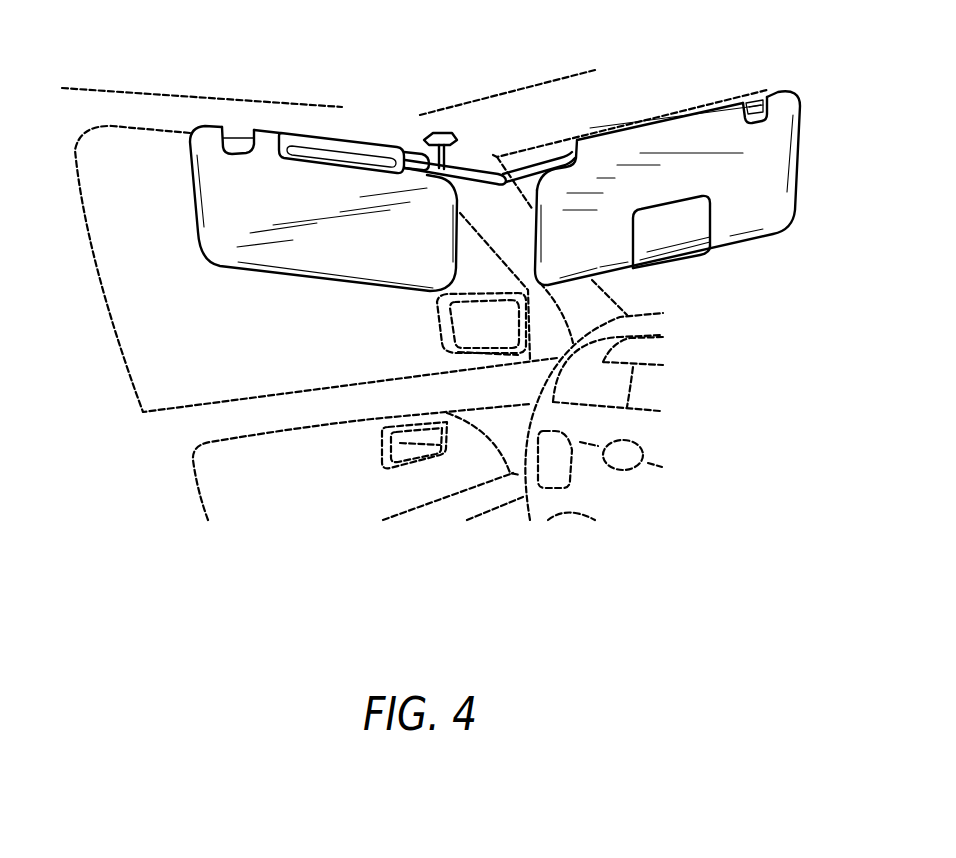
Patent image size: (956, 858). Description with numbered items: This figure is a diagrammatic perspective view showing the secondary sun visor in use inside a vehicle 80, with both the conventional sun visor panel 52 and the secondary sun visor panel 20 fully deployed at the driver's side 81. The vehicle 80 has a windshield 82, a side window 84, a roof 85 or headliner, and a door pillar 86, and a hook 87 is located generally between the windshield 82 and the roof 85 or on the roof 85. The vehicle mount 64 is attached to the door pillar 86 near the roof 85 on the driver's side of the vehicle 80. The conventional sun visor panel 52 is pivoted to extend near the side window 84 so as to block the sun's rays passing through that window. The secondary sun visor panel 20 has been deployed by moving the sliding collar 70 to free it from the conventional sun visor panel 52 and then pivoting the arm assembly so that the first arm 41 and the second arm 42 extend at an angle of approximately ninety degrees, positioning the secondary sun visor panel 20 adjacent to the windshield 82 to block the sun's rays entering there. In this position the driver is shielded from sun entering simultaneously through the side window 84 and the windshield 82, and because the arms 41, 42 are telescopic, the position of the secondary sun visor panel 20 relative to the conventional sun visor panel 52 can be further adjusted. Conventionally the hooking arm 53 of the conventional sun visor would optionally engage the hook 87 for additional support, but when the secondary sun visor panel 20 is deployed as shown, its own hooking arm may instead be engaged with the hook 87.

The secondary sun visor panel 20 is at (799, 170).
The first arm 41 is at (530, 173).
The second arm 42 is at (467, 165).
The conventional sun visor panel 52 is at (197, 233).
The hooking arm 53 is at (238, 132).
The vehicle mount 64 is at (440, 133).
The sliding collar 70 is at (723, 247).
The vehicle 80 is at (158, 496).
The driver's side 81 is at (544, 547).
The windshield 82 is at (737, 90).
The side window 84 is at (135, 320).
The roof 85 is at (513, 82).
The door pillar 86 is at (617, 302).
The hook 87 is at (753, 100).